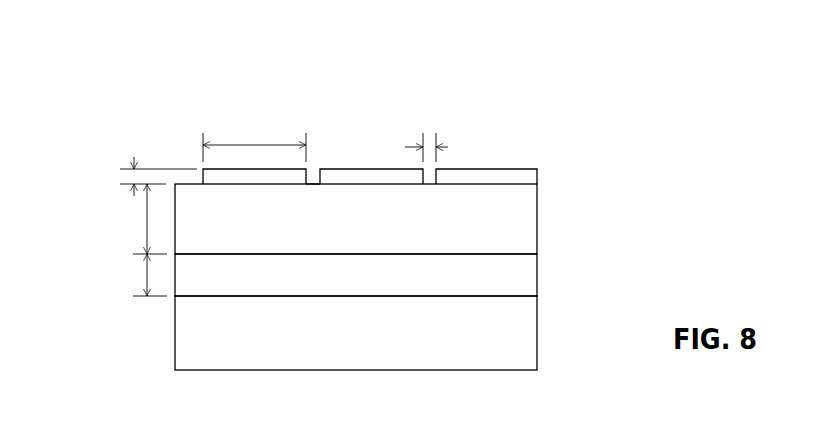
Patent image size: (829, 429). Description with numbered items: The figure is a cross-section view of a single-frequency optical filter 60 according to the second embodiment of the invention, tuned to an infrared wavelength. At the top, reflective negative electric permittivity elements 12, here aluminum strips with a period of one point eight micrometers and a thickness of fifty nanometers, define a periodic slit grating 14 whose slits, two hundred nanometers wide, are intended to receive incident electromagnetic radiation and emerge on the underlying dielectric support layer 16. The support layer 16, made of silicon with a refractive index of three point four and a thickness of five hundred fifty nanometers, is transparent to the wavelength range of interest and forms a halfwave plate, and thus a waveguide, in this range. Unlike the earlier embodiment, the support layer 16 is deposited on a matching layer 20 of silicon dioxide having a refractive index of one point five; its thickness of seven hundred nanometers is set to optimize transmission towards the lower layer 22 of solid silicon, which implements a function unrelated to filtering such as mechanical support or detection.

The filter 60 is at (486, 86).
The reflective negative electric permittivity elements 12 is at (487, 167).
The slit grating 14 is at (313, 176).
The dielectric support layer 16 is at (541, 217).
The matching layer 20 is at (541, 277).
The functionalized layer 22 is at (541, 341).